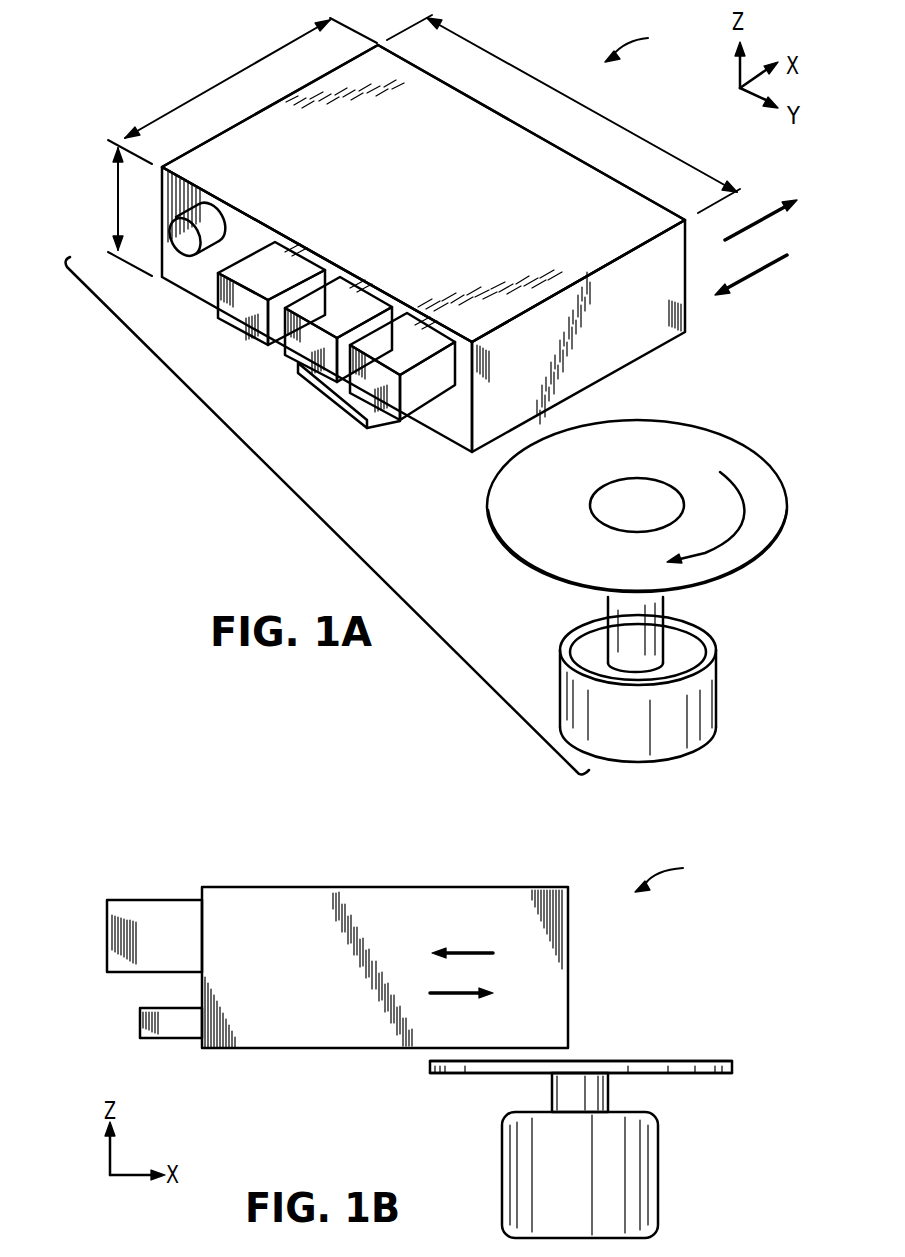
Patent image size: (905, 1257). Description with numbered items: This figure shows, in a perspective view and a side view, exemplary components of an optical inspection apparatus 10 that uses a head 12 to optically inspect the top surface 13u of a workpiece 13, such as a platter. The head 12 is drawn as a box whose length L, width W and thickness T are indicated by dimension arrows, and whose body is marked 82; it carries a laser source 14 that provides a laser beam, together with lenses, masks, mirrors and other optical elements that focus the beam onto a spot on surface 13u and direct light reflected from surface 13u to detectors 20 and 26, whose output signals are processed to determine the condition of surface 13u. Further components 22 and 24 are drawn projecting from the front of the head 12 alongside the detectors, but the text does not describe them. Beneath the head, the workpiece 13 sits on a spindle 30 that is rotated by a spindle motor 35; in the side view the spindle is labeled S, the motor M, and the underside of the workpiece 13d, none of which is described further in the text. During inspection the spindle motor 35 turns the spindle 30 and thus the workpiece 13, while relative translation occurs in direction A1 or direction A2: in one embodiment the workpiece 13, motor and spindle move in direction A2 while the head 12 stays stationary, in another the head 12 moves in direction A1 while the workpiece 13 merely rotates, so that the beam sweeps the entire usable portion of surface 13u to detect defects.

In FIG. 1A, the optical inspection apparatus 10 is at (637, 44).
In FIG. 1B, the optical inspection apparatus 10 is at (675, 873).
In FIG. 1A, the head 12 is at (592, 190).
In FIG. 1B, the head 12 is at (450, 887).
In FIG. 1A, the housing cover / body 82 is at (449, 223).
In FIG. 1B, the housing cover / body 82 is at (289, 1003).
In FIG. 1A, the laser source 14 is at (187, 260).
In FIG. 1A, the detector 20 is at (322, 398).
In FIG. 1B, the detector 20 is at (163, 1038).
In FIG. 1A, the connector 22 is at (398, 422).
In FIG. 1B, the connector 22 is at (147, 972).
In FIG. 1A, the connector 24 is at (290, 362).
In FIG. 1A, the detector 26 is at (238, 332).
In FIG. 1A, the workpiece 13 is at (740, 570).
In FIG. 1B, the workpiece 13 is at (738, 1072).
In FIG. 1A, the top surface 13u is at (728, 435).
In FIG. 1B, the top surface 13u is at (688, 1060).
In FIG. 1B, the lower surface of disk 13d is at (475, 1075).
In FIG. 1A, the spindle 30 is at (667, 602).
In FIG. 1A, the spindle motor 35 is at (715, 693).
In FIG. 1B, the spindle S is at (610, 1103).
In FIG. 1B, the motor M is at (658, 1197).
In FIG. 1A, the length dimension L is at (225, 82).
In FIG. 1A, the width dimension W is at (500, 58).
In FIG. 1A, the thickness dimension T is at (115, 208).
In FIG. 1A, the direction A1 is at (755, 275).
In FIG. 1B, the direction A1 is at (462, 950).
In FIG. 1A, the direction A2 is at (753, 218).
In FIG. 1B, the direction A2 is at (475, 1000).